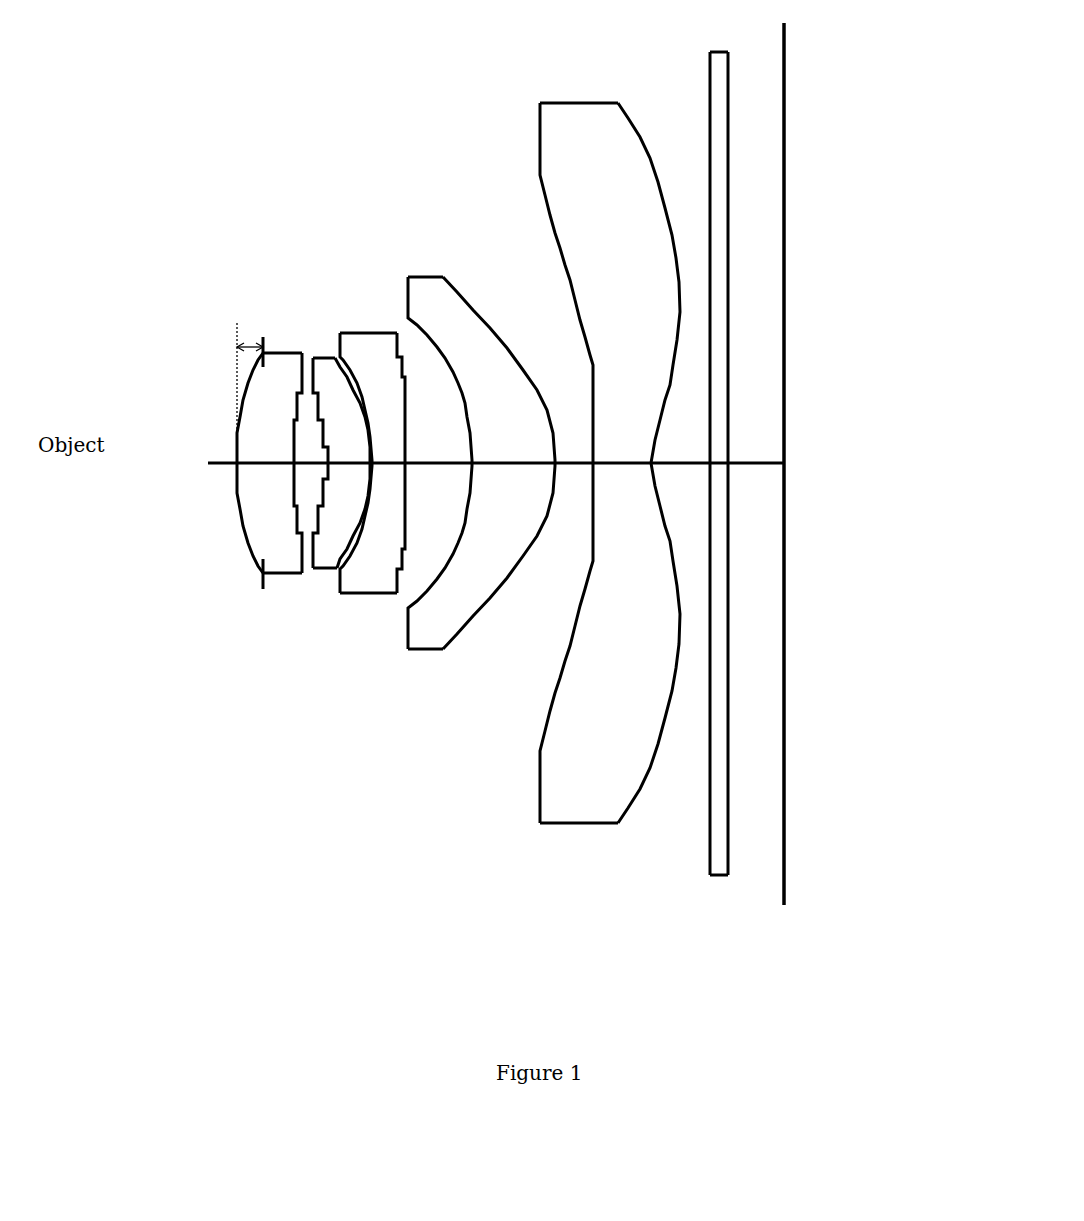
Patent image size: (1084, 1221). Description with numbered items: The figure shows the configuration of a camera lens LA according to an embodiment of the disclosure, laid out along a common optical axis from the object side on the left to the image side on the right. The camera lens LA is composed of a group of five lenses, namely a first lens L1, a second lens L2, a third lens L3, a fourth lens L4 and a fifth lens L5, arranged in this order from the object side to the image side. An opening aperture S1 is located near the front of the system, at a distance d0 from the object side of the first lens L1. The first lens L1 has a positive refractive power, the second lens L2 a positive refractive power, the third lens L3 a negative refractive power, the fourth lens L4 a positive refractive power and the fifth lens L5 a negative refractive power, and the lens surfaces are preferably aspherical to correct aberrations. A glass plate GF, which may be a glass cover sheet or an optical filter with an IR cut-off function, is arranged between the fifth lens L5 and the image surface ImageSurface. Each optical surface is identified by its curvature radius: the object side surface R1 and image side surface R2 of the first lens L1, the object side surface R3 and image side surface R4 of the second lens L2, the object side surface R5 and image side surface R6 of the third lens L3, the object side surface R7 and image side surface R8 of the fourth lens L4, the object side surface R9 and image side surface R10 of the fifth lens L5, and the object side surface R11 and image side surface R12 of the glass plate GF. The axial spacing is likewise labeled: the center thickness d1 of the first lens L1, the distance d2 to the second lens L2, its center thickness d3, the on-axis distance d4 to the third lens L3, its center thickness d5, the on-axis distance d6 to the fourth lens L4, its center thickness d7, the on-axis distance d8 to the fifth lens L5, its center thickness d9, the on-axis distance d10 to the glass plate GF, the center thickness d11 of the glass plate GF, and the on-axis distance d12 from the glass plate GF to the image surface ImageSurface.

The camera lens LA is at (238, 176).
The opening aperture S1 is at (266, 340).
The first lens L1 is at (208, 512).
The second lens L2 is at (293, 505).
The third lens L3 is at (344, 523).
The fourth lens L4 is at (454, 521).
The fifth lens L5 is at (554, 492).
The glass plate GF is at (712, 492).
The image surface ImageSurface is at (785, 315).
The object side surface of the first lens R1 is at (235, 472).
The image side surface of the first lens R2 is at (293, 478).
The object side surface of the second lens R3 is at (330, 486).
The image side surface of the second lens R4 is at (362, 485).
The object side surface of the third lens R5 is at (370, 500).
The image side surface of the third lens R6 is at (403, 503).
The object side surface of the fourth lens R7 is at (470, 503).
The image side surface of the fourth lens R8 is at (548, 510).
The object side surface of the fifth lens R9 is at (593, 548).
The image side surface of the fifth lens R10 is at (655, 548).
The object side surface of the glass plate R11 is at (710, 707).
The image side surface of the glass plate R12 is at (729, 707).
The distance from opening aperture to first lens d0 is at (250, 378).
The center thickness of the first lens d1 is at (265, 454).
The distance from first lens to second lens d2 is at (312, 454).
The center thickness of the second lens d3 is at (350, 454).
The on-axis distance from second lens to third lens d4 is at (370, 455).
The center thickness of the third lens d5 is at (388, 454).
The on-axis distance from third lens to fourth lens d6 is at (438, 454).
The center thickness of the fourth lens d7 is at (513, 454).
The on-axis distance from fourth lens to fifth lens d8 is at (574, 454).
The center thickness of the fifth lens d9 is at (622, 454).
The on-axis distance from fifth lens to glass plate d10 is at (680, 454).
The center thickness of the glass plate d11 is at (721, 463).
The on-axis distance from glass plate to image surface d12 is at (756, 454).